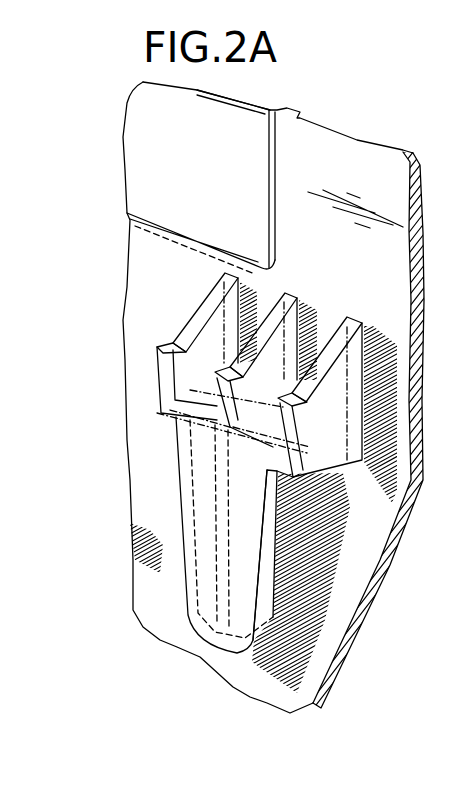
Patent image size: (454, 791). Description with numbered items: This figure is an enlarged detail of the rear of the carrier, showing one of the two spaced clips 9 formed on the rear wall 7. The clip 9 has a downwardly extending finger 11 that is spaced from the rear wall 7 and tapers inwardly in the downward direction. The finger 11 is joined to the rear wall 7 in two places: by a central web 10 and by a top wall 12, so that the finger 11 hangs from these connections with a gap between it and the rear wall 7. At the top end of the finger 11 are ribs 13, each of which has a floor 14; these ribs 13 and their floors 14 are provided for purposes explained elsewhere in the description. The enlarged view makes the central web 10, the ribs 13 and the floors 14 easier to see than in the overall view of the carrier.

The rear wall 7 is at (338, 268).
The clip 9 is at (140, 500).
The central web 10 is at (270, 603).
The finger 11 is at (207, 573).
The top wall 12 is at (323, 467).
The rib 13 is at (207, 303).
The floor 14 is at (173, 343).